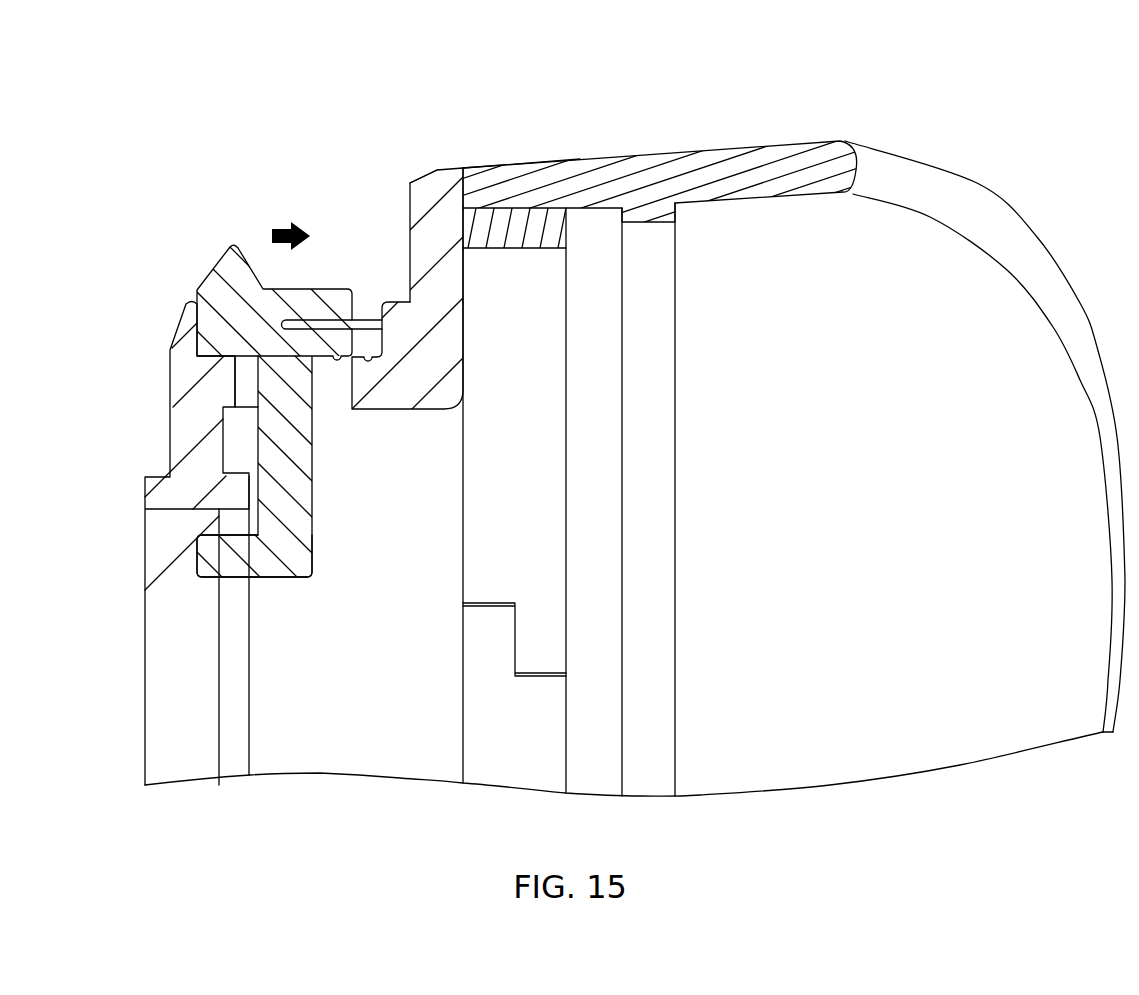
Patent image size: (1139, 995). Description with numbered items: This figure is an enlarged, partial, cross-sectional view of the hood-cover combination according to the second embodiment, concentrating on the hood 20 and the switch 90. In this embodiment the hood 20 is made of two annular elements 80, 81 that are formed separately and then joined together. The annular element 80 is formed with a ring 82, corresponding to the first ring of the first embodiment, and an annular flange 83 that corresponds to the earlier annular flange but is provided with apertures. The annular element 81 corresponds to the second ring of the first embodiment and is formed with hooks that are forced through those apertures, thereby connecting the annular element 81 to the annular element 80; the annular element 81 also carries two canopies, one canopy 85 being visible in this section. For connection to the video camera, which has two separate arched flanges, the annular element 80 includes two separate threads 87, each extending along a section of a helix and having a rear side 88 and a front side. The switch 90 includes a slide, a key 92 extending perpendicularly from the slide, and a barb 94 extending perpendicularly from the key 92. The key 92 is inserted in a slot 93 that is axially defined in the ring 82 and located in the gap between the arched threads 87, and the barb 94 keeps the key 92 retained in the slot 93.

The hood 20 is at (498, 70).
The annular element 80 is at (420, 165).
The annular element 81 is at (514, 152).
The ring 82 is at (400, 313).
The annular flange 83 is at (433, 227).
The canopy 85 is at (628, 173).
The thread 87 is at (235, 722).
The rear side 88 is at (172, 511).
The switch 90 is at (228, 283).
The key 92 is at (283, 440).
The slot 93 is at (243, 378).
The barb 94 is at (233, 562).